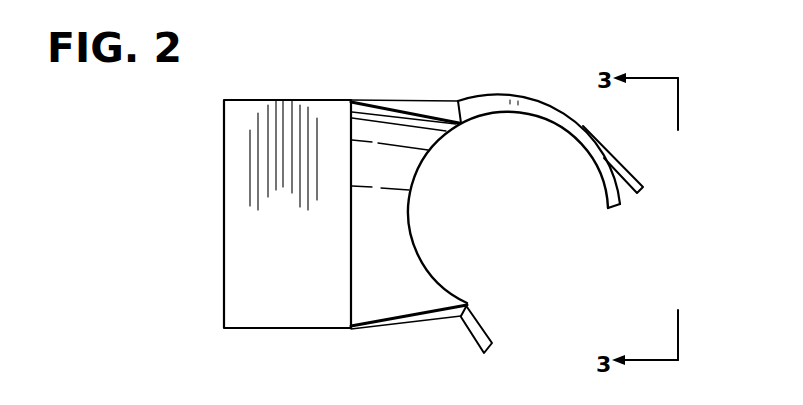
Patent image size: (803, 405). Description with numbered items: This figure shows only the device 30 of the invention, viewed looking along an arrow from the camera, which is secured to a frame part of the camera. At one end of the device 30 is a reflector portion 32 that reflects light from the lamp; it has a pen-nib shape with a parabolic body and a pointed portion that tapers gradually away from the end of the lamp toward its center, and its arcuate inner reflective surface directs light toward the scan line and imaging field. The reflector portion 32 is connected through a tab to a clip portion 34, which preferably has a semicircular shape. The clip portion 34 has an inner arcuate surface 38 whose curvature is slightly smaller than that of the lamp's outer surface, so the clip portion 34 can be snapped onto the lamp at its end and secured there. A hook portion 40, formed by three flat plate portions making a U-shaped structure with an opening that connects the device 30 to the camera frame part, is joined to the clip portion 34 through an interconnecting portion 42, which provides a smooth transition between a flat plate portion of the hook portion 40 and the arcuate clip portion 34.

The device 30 is at (563, 162).
The reflector portion 32 is at (650, 166).
The clip portion 34 is at (552, 90).
The inner arcuate surface 38 is at (552, 123).
The hook portion 40 is at (285, 90).
The interconnecting portion 42 is at (382, 92).